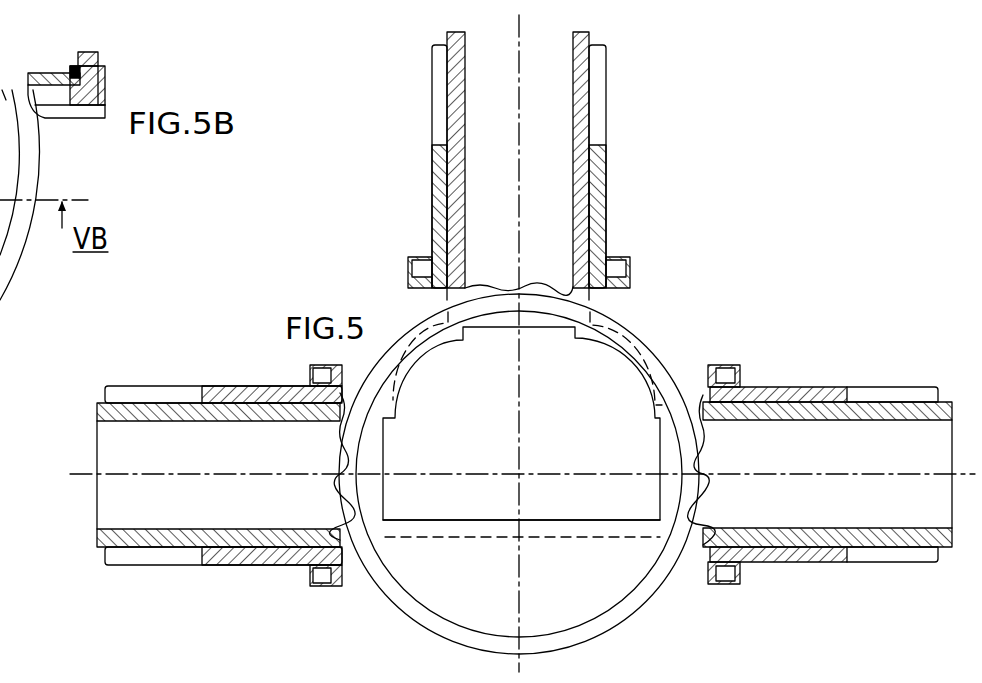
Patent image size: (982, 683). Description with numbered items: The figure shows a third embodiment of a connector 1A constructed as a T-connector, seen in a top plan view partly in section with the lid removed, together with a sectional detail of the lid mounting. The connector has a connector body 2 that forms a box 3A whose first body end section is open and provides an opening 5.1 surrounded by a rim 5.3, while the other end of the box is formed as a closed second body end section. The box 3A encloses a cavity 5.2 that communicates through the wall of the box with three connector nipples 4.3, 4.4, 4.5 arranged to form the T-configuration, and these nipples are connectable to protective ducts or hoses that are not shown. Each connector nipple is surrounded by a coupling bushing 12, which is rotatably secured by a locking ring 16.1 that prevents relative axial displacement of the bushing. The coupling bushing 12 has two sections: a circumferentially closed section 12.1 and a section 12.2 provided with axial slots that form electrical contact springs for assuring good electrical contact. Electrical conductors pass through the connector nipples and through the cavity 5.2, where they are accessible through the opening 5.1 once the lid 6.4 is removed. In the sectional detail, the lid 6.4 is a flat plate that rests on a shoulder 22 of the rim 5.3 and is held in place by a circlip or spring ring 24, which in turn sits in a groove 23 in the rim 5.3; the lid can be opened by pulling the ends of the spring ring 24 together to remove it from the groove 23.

In FIG. 5, the connector 1A is at (718, 200).
In FIG. 5, the connector body 2 is at (653, 358).
In FIG. 5, the box 3A is at (500, 462).
In FIG. 5, the connector nipple 4.3 is at (215, 465).
In FIG. 5, the connector nipple 4.4 is at (508, 145).
In FIG. 5, the connector nipple 4.5 is at (865, 463).
In FIG. 5, the opening 5.1 is at (427, 573).
In FIG. 5, the cavity 5.2 is at (547, 507).
In FIG. 5, the rim 5.3 is at (630, 345).
In FIG. 5B, the rim 5.3 is at (86, 56).
In FIG. 5, the coupling bushing 12 is at (612, 175).
In FIG. 5, the section 12.1 is at (769, 387).
In FIG. 5, the section 12.2 is at (902, 390).
In FIG. 5, the locking ring 16.1 is at (730, 397).
In FIG. 5B, the lid 6.4 is at (47, 78).
In FIG. 5B, the shoulder 22 is at (63, 88).
In FIG. 5B, the groove 23 is at (99, 70).
In FIG. 5B, the spring ring 24 is at (80, 65).